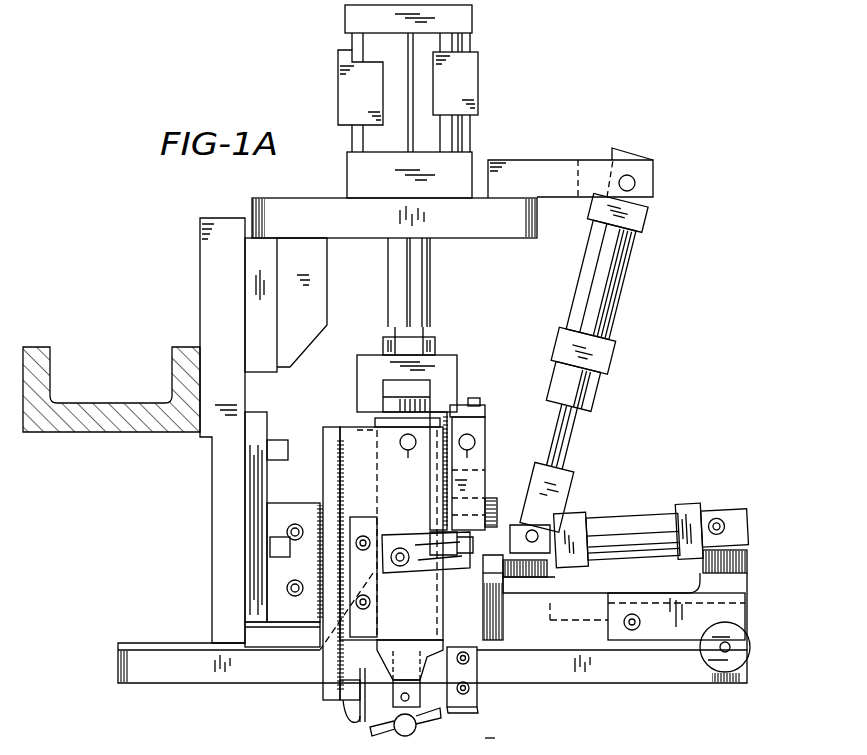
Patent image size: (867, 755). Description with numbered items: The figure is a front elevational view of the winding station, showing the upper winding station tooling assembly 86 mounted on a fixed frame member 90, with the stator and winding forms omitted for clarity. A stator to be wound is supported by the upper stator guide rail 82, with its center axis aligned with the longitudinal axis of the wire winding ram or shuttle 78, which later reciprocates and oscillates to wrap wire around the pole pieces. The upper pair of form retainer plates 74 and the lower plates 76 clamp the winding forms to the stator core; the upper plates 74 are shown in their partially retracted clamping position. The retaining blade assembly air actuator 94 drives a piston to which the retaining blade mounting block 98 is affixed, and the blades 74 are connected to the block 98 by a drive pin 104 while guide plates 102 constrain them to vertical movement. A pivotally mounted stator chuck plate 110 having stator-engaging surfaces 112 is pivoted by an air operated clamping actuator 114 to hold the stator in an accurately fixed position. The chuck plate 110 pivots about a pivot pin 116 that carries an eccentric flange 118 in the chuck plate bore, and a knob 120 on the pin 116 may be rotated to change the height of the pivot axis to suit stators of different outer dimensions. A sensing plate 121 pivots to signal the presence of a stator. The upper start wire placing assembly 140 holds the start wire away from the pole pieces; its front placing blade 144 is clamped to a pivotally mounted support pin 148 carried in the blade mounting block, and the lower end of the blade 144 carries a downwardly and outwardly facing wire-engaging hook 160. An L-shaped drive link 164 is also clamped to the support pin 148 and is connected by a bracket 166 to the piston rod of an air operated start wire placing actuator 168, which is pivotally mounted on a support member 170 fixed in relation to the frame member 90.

The upper form retainer plate 74 is at (408, 668).
The lower form retainer plate 76 is at (356, 711).
The wire winding ram or shuttle 78 is at (410, 728).
The upper stator guide rail 82 is at (118, 652).
The upper winding station tooling assembly 86 is at (570, 102).
The fixed frame member 90 is at (118, 402).
The retaining blade assembly air actuator 94 is at (358, 44).
The retaining blade mounting block 98 is at (345, 443).
The guide plate 102 is at (357, 527).
The drive pin 104 is at (412, 436).
The stator chuck plate 110 is at (540, 590).
The stator-engaging surface 112 is at (343, 722).
The air operated clamping actuator 114 is at (612, 281).
The pivot pin 116 is at (733, 643).
The eccentric flange 118 is at (753, 617).
The knob 120 is at (730, 664).
The sensing plate 121 is at (517, 743).
The upper start wire placing assembly 140 is at (540, 470).
The front placing blade 144 is at (503, 618).
The support pin 148 is at (477, 416).
The wire-engaging hook 160 is at (450, 713).
The L-shaped drive link 164 is at (512, 455).
The bracket 166 is at (425, 537).
The air operated start wire placing actuator 168 is at (645, 515).
The support member 170 is at (737, 570).